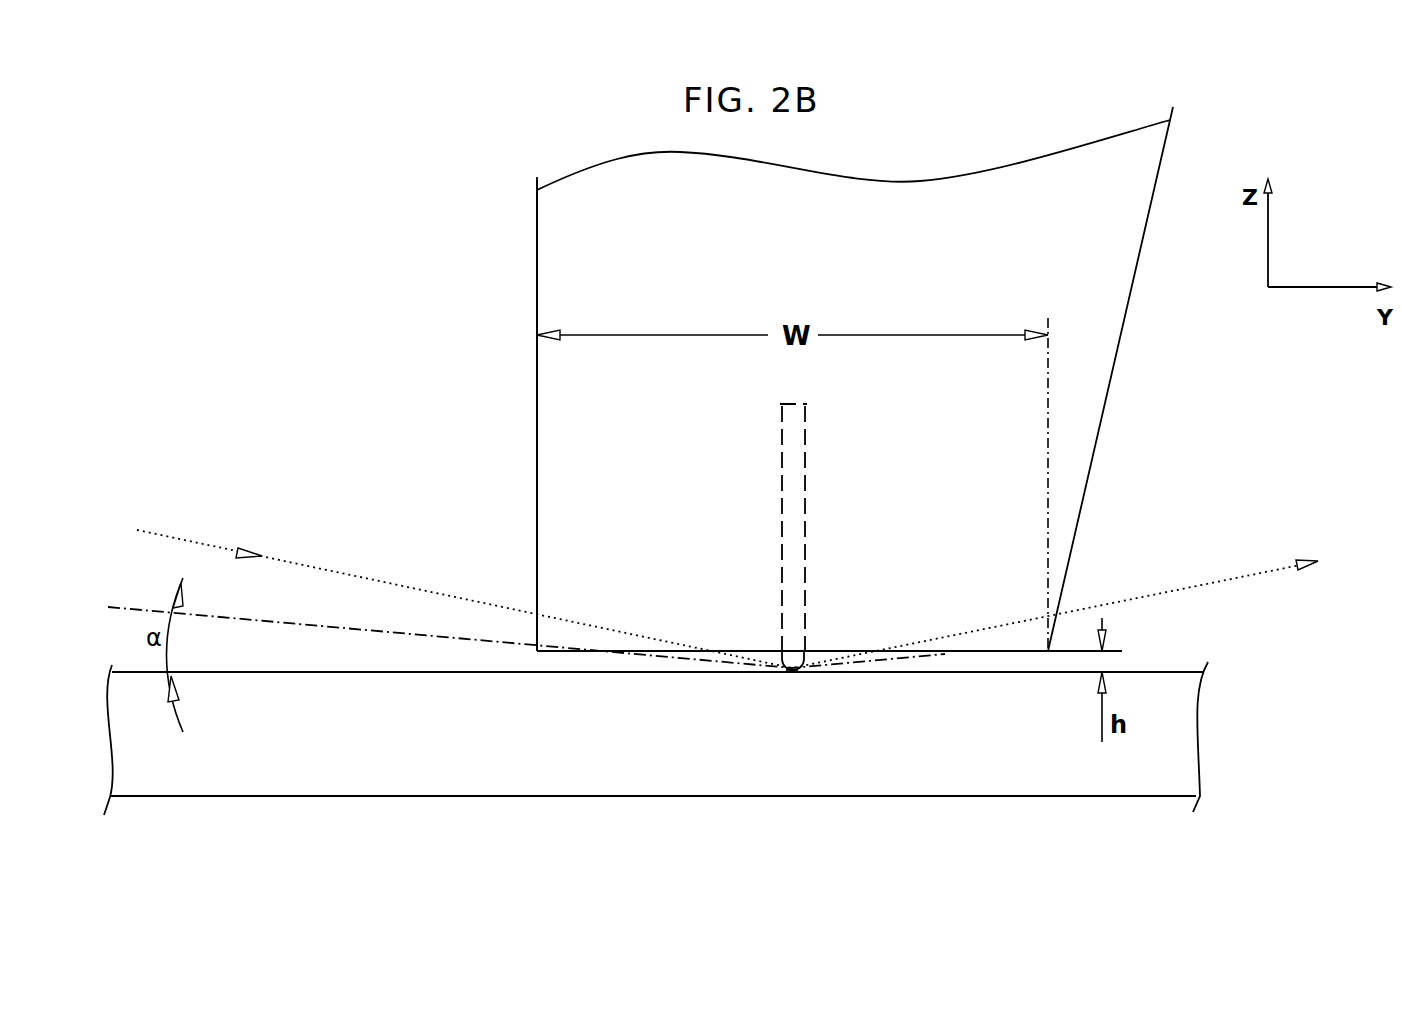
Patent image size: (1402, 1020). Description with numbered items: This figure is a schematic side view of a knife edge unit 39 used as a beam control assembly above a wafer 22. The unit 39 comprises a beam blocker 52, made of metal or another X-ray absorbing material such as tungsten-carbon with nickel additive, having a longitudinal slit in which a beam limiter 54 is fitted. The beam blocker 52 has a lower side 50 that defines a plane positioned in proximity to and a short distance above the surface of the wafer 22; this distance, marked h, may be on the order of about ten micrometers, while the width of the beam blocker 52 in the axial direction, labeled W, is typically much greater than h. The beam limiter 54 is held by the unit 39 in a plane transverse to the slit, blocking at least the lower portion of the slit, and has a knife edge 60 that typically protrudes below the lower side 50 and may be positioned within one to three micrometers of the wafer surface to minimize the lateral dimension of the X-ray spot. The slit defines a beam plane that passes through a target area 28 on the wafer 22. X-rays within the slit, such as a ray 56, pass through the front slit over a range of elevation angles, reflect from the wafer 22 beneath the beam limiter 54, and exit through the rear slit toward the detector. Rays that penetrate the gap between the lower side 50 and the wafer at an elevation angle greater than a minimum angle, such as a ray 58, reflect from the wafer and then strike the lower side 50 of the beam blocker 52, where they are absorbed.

The knife edge unit 39 is at (370, 195).
The beam blocker 52 is at (537, 472).
The lower side 50 is at (948, 653).
The beam limiter 54 is at (805, 545).
The knife edge 60 is at (778, 666).
The target area 28 is at (792, 672).
The ray 56 is at (389, 587).
The ray 58 is at (340, 627).
The wafer 22 is at (1180, 740).